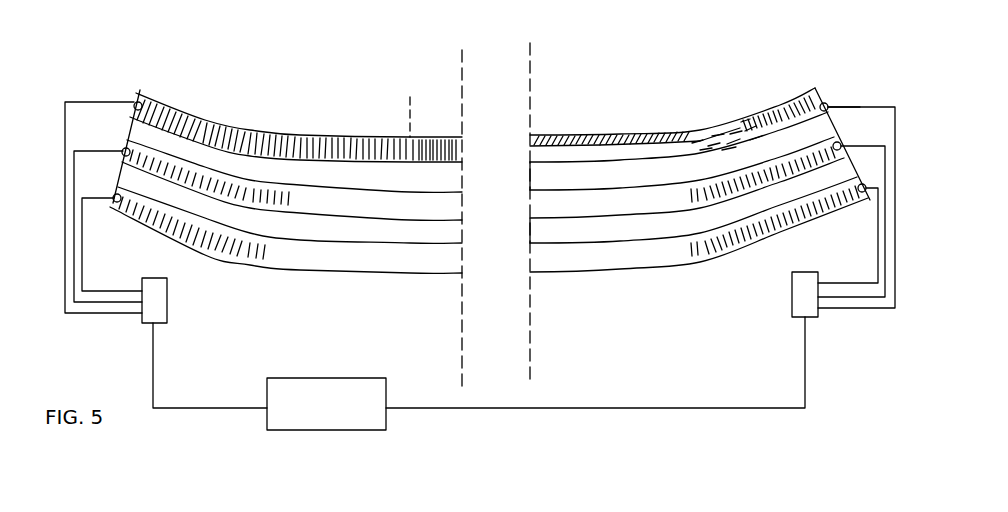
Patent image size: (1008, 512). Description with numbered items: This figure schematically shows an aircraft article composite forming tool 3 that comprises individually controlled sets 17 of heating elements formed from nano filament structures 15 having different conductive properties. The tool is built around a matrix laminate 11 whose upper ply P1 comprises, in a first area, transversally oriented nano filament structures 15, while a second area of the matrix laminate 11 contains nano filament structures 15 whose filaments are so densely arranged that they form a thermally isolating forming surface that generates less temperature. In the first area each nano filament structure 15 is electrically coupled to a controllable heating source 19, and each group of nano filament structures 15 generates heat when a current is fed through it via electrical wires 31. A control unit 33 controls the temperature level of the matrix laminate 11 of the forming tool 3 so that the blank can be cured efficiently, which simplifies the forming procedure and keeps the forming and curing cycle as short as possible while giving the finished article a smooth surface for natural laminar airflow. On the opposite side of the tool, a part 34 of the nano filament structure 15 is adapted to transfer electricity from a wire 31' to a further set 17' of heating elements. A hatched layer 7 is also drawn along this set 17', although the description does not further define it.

The aircraft article composite forming tool 3 is at (210, 84).
The hatched cover layer 7 is at (627, 132).
The matrix laminate 11 is at (305, 102).
The nano filament structures 15 is at (430, 178).
The sets of heating elements 17 is at (476, 96).
The set of heating elements 17' is at (670, 100).
The controllable heating source 19 is at (42, 192).
The electrical wires 31 is at (459, 212).
The wire 31' is at (869, 86).
The control unit 33 is at (386, 386).
The part of the nano filament structure 34 is at (727, 141).
The upper ply P1 is at (112, 92).